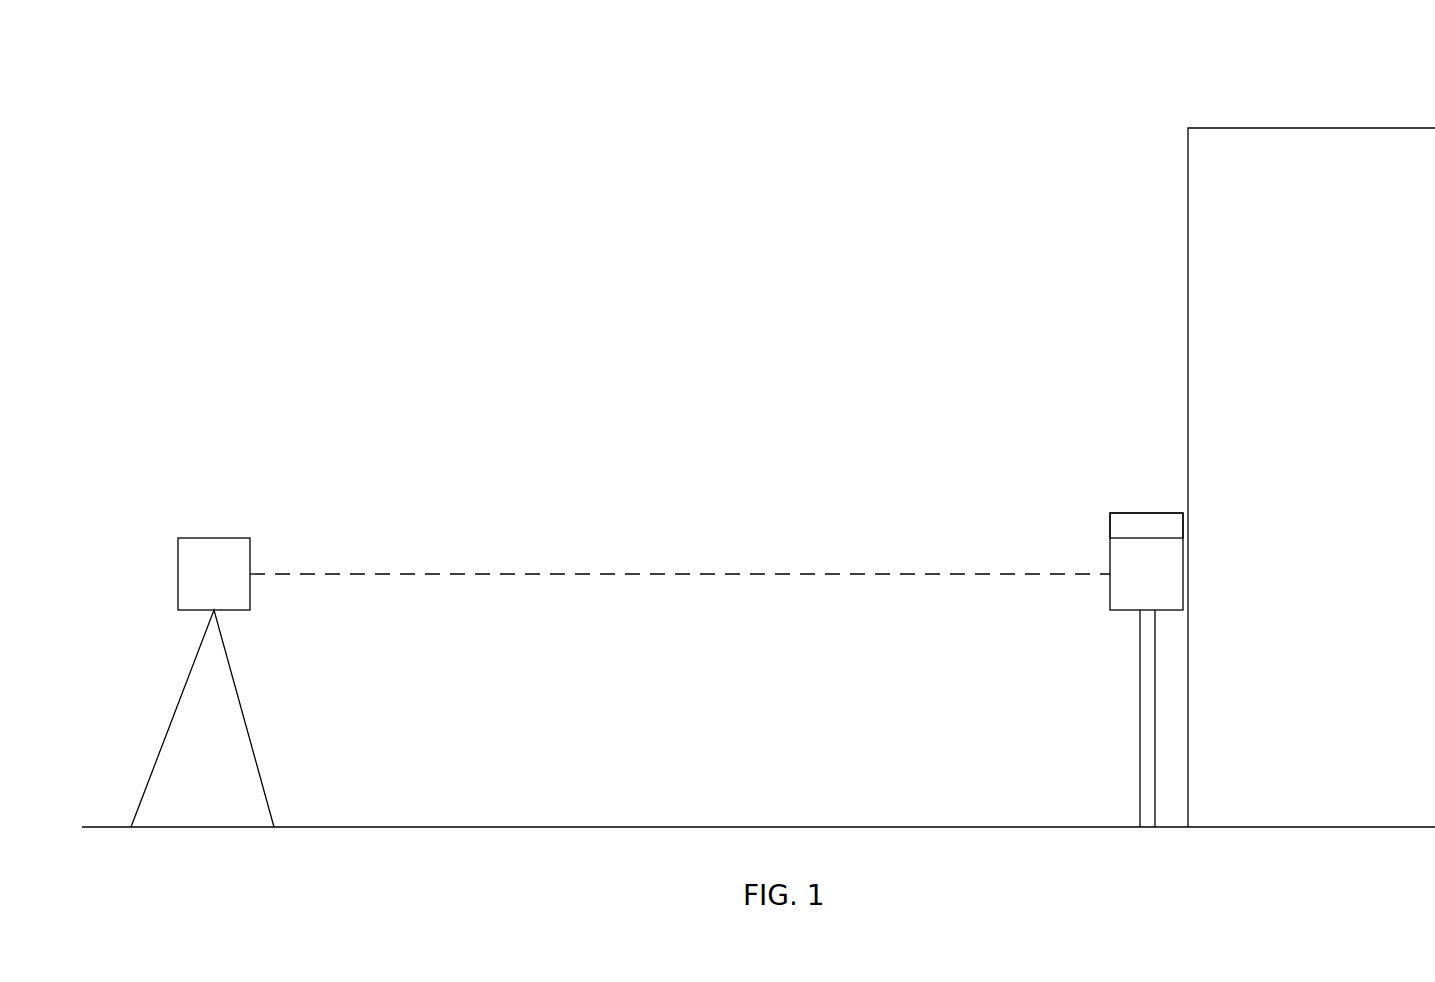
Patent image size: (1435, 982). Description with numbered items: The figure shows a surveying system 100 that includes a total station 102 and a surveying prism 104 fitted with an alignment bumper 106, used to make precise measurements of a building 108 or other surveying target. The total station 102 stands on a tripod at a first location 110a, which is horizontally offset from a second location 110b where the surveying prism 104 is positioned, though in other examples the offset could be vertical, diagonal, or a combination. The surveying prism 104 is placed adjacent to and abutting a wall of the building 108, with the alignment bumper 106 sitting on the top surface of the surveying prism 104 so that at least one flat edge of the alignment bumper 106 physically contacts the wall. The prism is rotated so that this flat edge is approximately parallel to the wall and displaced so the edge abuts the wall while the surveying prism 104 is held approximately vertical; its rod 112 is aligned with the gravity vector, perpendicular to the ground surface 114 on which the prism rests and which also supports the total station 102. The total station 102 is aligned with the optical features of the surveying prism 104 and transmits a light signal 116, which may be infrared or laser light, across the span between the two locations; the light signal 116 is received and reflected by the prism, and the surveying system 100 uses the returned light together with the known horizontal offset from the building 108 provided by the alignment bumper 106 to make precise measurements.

The surveying system 100 is at (200, 102).
The total station 102 is at (213, 575).
The surveying prism 104 is at (1147, 574).
The alignment bumper 106 is at (1147, 526).
The building 108 is at (1261, 178).
The first location 110a is at (202, 827).
The second location 110b is at (1147, 827).
The rod 112 is at (1140, 719).
The ground surface 114 is at (718, 827).
The light signal 116 is at (612, 574).